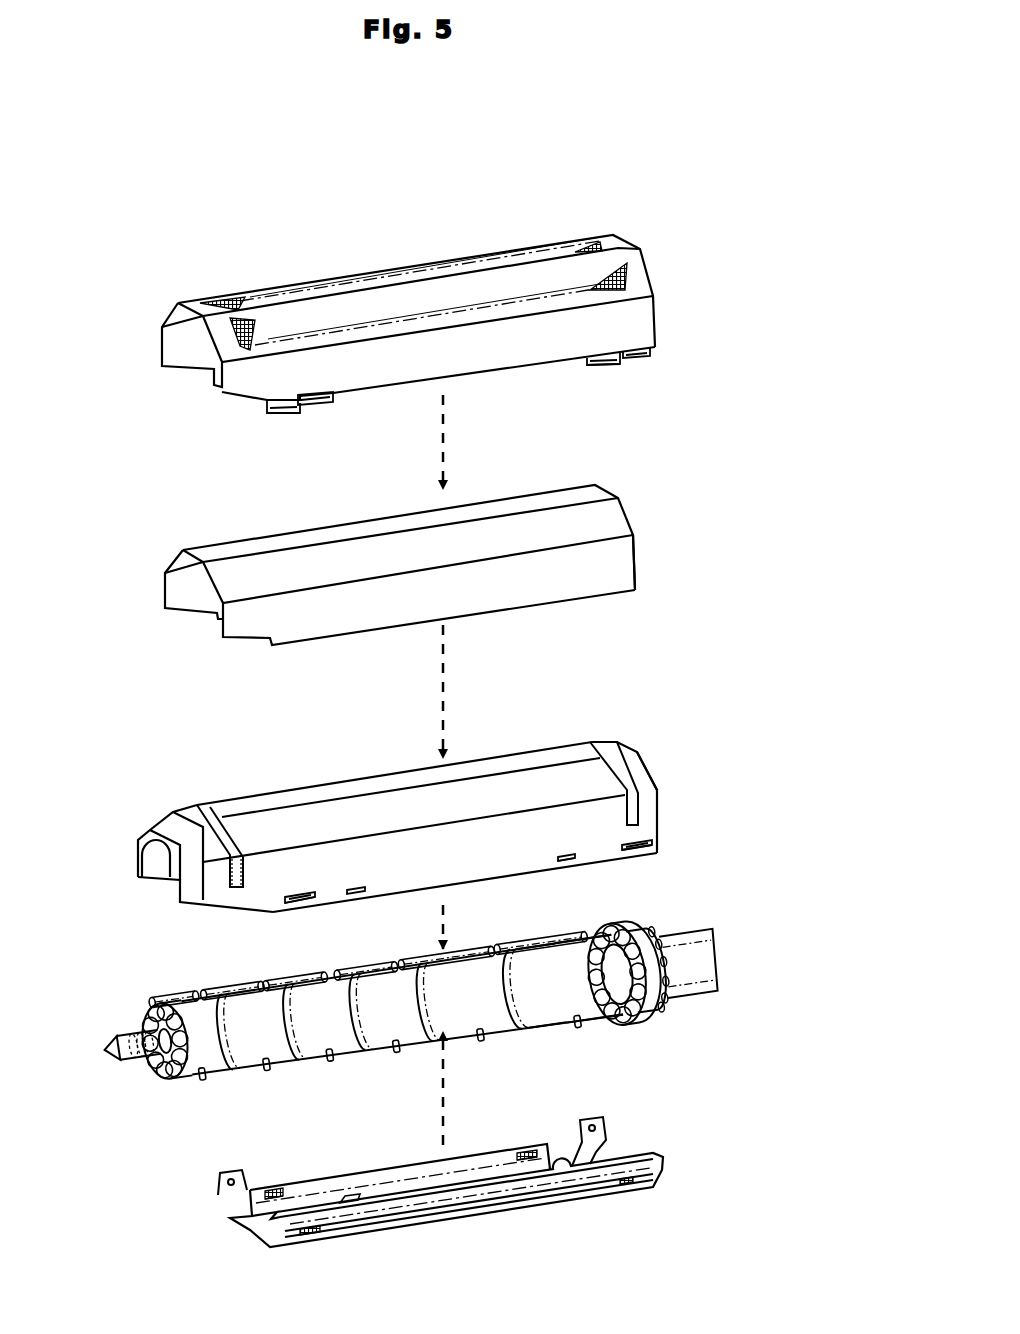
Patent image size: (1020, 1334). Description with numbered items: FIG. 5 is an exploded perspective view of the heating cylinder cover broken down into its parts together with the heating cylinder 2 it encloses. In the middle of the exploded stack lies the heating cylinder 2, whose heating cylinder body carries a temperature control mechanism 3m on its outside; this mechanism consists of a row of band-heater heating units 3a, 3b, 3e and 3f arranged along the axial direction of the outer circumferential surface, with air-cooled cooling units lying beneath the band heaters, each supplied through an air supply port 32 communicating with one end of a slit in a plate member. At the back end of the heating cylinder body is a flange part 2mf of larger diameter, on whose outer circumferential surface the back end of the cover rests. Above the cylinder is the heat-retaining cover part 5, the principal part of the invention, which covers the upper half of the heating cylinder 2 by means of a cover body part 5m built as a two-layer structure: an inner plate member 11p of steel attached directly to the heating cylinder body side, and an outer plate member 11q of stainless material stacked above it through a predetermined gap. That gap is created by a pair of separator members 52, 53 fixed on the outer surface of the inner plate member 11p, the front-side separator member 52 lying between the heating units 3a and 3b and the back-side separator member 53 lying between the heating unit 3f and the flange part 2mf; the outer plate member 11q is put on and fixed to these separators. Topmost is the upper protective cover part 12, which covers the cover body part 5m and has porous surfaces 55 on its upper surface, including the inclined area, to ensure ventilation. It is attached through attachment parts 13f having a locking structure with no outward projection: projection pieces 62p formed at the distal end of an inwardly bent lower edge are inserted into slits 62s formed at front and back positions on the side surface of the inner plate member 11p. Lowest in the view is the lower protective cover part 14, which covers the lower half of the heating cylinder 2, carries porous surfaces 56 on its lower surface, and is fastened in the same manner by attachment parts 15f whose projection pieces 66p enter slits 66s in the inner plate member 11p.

The heat-retaining cover part 5 is at (724, 577).
The cover body part 5m is at (672, 655).
The upper protective cover part 12 is at (446, 242).
The porous surfaces 55 is at (180, 306).
The projection pieces 62p is at (290, 414).
The attachment parts 13f is at (512, 635).
The outer plate member 11q is at (531, 485).
The inner plate member 11p is at (485, 755).
The front-side separator member 52 is at (200, 804).
The back-side separator member 53 is at (593, 742).
The slits 62s is at (300, 905).
The slits 66s is at (356, 895).
The attachment parts 15f is at (459, 1074).
The heating cylinder 2 is at (414, 1041).
The heating unit 3a is at (176, 1088).
The heating unit 3b is at (241, 1078).
The air supply port 32 is at (321, 1067).
The heating unit 3e is at (497, 1036).
The temperature control mechanism 3m is at (544, 1030).
The heating unit 3f is at (592, 1024).
The flange part 2mf is at (642, 1031).
The lower protective cover part 14 is at (422, 1225).
The porous surfaces 56 is at (235, 1209).
The projection pieces 66p is at (366, 1202).